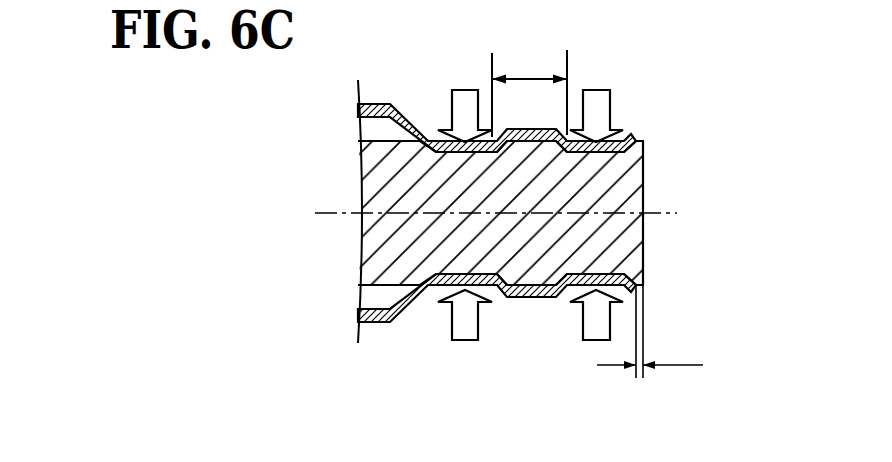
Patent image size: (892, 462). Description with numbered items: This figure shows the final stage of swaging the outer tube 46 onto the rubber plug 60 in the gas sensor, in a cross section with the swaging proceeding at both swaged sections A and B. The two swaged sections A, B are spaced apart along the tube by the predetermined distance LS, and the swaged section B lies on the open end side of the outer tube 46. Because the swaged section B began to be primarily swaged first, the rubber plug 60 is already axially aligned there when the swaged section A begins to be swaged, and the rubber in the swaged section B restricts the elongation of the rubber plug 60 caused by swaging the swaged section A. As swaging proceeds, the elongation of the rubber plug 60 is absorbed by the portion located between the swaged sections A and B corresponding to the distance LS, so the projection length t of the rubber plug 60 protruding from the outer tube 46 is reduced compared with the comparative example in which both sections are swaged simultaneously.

The outer tube 46 is at (634, 138).
The rubber plug 60 is at (618, 186).
The swaged section A is at (465, 203).
The swaged section B is at (596, 203).
The predetermined distance LS is at (529, 93).
The projection length t is at (650, 332).